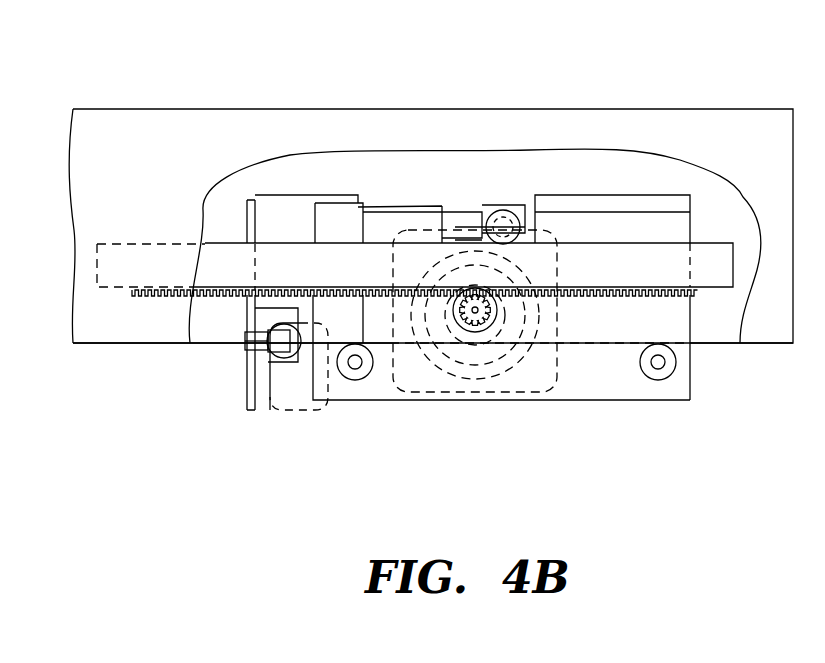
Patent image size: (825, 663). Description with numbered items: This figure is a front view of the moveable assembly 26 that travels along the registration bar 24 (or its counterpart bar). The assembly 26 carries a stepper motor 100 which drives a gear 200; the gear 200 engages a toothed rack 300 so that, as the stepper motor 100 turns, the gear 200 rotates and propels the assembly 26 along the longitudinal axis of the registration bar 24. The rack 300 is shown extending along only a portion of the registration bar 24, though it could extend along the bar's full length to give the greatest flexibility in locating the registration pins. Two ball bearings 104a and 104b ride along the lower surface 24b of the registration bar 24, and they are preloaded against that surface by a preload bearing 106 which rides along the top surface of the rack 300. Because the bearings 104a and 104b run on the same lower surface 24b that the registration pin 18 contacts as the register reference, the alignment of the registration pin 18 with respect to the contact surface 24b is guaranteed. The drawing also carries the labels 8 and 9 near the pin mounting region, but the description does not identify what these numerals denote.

The registration bar 24 is at (184, 173).
The lower surface of the registration bar 24b is at (120, 343).
The moveable assembly 26 is at (598, 230).
The stepper motor 100 is at (430, 263).
The preload bearing 106 is at (498, 237).
The gear 200 is at (475, 312).
The rack 300 is at (578, 292).
The ball bearing 104a is at (355, 378).
The ball bearing 104b is at (658, 375).
The registration pin 18 is at (290, 410).
The clamp 8 is at (324, 396).
The bolt 9 is at (290, 360).